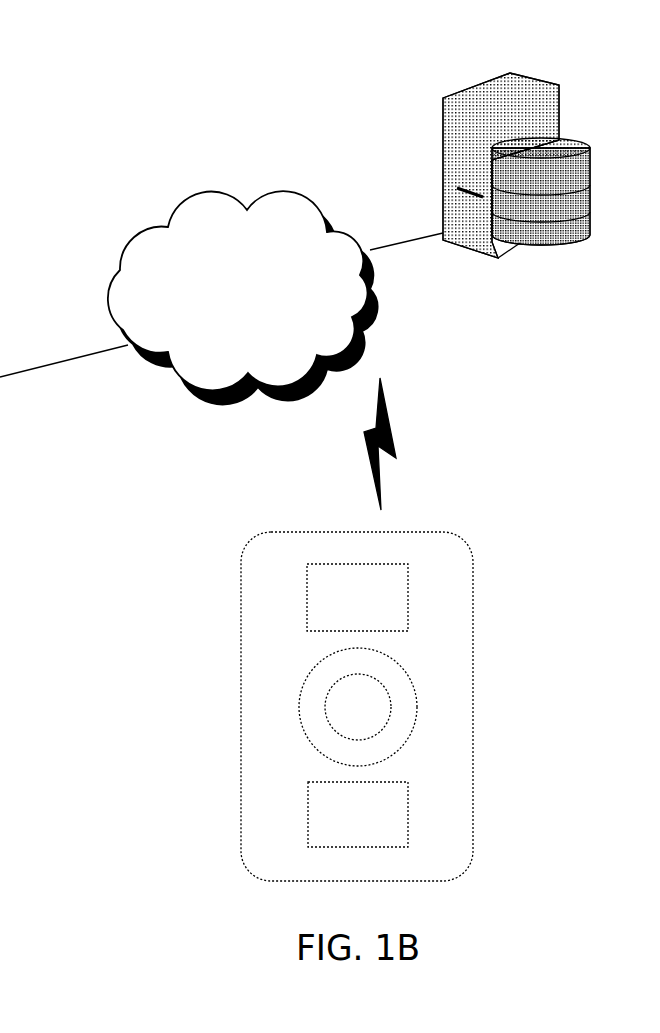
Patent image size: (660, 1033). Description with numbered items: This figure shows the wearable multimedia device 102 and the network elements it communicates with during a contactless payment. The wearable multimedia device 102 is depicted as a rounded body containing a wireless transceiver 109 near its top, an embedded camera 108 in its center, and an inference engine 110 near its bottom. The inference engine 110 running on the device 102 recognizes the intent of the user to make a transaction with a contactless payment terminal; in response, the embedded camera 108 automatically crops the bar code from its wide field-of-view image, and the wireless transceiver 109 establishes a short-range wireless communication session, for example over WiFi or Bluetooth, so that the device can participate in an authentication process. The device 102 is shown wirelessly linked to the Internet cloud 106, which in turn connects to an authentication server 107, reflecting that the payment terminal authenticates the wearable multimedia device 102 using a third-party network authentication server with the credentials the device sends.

The wearable multimedia device 102 is at (465, 537).
The internet network 106 is at (246, 208).
The authentication server 107 is at (443, 100).
The embedded camera 108 is at (417, 707).
The wireless transceiver 109 is at (308, 597).
The inference engine 110 is at (409, 813).